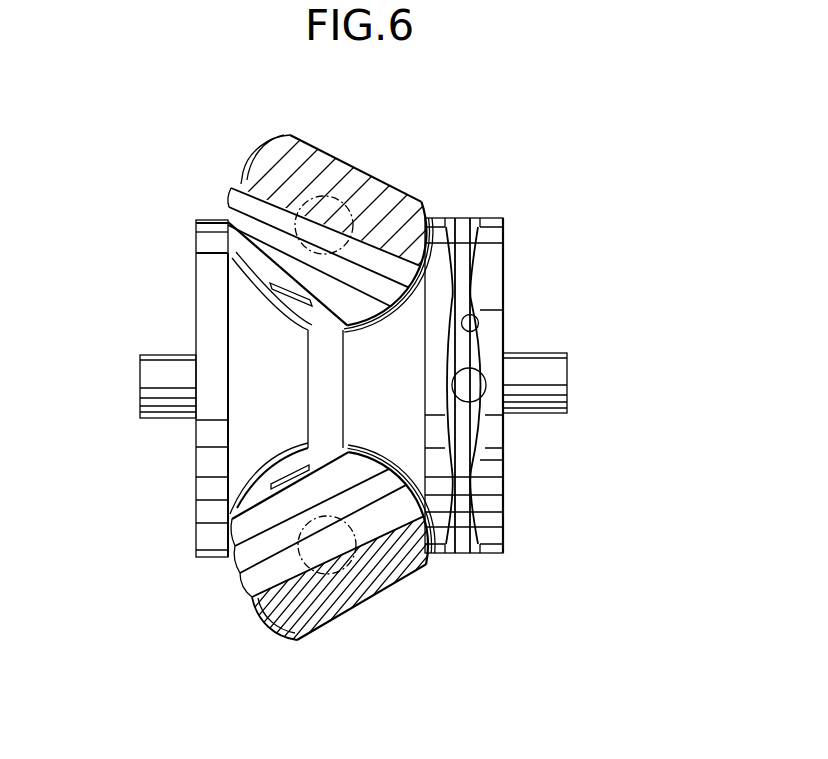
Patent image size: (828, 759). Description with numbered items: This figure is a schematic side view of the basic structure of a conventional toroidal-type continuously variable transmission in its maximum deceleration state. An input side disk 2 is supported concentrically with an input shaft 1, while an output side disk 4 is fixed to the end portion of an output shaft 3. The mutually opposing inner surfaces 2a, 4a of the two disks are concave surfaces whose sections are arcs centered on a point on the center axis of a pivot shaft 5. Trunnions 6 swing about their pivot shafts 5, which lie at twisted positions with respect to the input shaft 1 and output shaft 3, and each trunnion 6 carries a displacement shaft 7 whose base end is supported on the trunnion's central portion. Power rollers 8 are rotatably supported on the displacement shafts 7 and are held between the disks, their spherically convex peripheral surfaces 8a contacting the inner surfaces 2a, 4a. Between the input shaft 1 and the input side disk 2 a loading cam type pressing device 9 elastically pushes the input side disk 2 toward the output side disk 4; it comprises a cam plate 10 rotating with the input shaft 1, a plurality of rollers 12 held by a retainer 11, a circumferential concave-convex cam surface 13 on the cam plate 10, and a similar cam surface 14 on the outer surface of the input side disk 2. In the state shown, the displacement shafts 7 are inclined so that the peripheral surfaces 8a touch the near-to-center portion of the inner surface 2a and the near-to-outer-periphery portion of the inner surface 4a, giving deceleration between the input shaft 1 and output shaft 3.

The input shaft 1 is at (553, 381).
The input side disk 2 is at (440, 217).
The inner surface of the input side disk 2a is at (388, 542).
The output shaft 3 is at (153, 387).
The output side disk 4 is at (212, 308).
The inner surface of the output side disk 4a is at (262, 303).
The pivot shaft 5 is at (340, 197).
The trunnion 6 is at (277, 157).
The displacement shaft 7 is at (262, 308).
The power roller 8 is at (236, 241).
The peripheral surface of the power roller 8a is at (240, 235).
The pressing device 9 is at (505, 367).
The cam plate 10 is at (497, 252).
The retainer 11 is at (470, 217).
The roller 12 is at (447, 218).
The cam surface 13 is at (474, 316).
The cam surface 14 is at (466, 428).